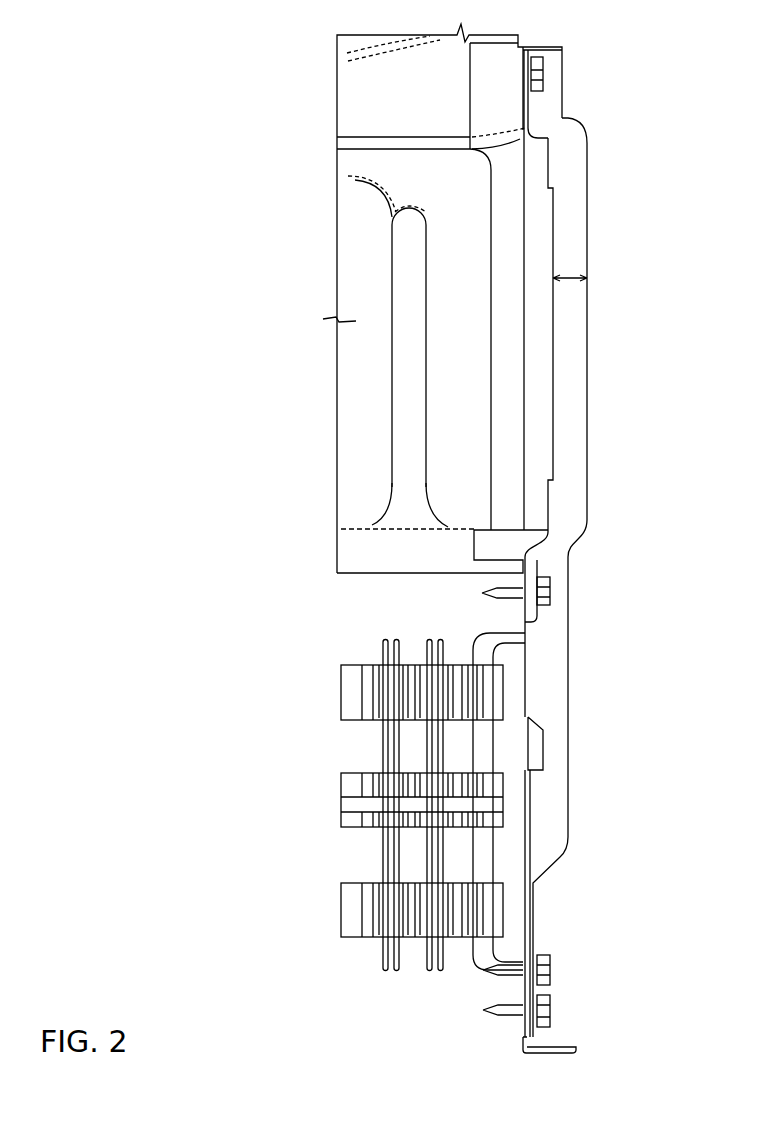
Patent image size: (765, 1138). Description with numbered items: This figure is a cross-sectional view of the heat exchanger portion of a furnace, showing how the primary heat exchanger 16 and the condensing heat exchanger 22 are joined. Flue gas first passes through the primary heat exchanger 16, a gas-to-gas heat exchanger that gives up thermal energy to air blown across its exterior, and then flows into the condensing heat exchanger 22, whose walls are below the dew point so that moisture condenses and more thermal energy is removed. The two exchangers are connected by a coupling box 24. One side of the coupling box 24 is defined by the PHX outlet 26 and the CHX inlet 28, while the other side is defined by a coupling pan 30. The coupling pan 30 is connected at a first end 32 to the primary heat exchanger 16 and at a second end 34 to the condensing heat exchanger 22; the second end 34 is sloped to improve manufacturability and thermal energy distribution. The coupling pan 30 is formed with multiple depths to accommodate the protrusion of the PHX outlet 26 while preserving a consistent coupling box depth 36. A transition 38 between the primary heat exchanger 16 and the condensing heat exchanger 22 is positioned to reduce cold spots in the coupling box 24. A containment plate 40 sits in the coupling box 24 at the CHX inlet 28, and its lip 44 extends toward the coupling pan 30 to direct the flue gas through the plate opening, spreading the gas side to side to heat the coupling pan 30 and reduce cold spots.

The primary heat exchanger 16 is at (345, 265).
The condensing heat exchanger 22 is at (332, 695).
The coupling box 24 is at (597, 337).
The PHX outlet 26 is at (545, 237).
The CHX inlet 28 is at (487, 755).
The coupling pan 30 is at (595, 448).
The first end 32 is at (568, 120).
The second end 34 is at (548, 872).
The coupling box depth 36 is at (568, 278).
The transition 38 is at (582, 540).
The containment plate 40 is at (533, 698).
The lip 44 is at (548, 748).